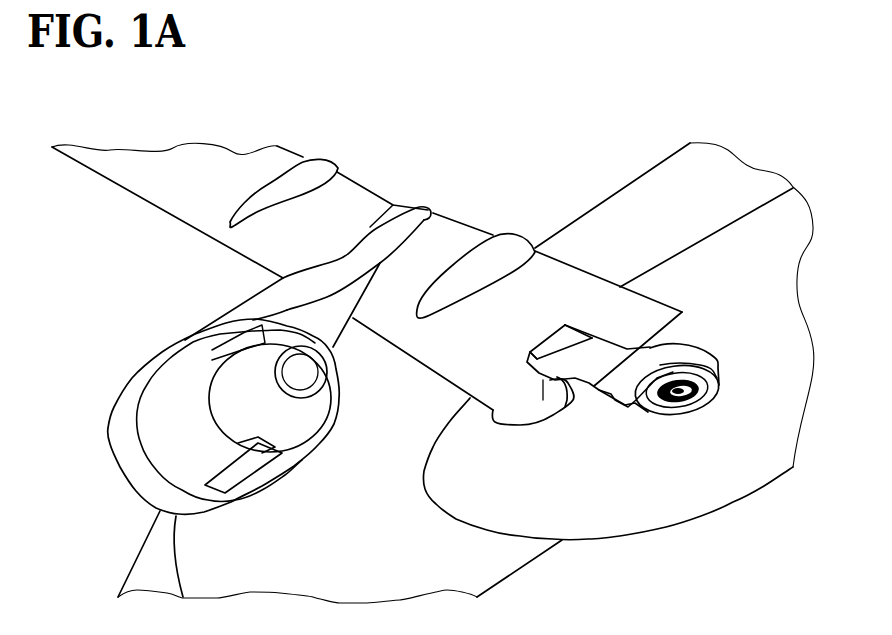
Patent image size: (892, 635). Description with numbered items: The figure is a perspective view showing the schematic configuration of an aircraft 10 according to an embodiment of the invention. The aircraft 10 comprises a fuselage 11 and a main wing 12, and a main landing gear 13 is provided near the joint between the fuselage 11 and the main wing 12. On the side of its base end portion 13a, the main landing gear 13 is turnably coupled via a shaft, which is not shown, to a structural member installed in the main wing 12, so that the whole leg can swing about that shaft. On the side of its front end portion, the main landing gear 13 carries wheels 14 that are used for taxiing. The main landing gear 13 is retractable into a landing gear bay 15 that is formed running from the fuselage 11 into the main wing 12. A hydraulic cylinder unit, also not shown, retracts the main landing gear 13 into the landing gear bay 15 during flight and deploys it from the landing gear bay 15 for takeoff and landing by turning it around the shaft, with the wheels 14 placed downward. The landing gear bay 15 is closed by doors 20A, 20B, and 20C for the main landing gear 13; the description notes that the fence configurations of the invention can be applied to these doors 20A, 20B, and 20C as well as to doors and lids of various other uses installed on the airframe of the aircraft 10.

The aircraft 10 is at (593, 164).
The fuselage 11 is at (482, 562).
The main wing 12 is at (447, 218).
The main landing gear 13 is at (610, 400).
The base end portion 13a is at (543, 400).
The wheels 14 is at (713, 387).
The landing gear bay 15 is at (660, 352).
The door 20A is at (543, 380).
The door 20B is at (578, 331).
The door 20C is at (533, 355).